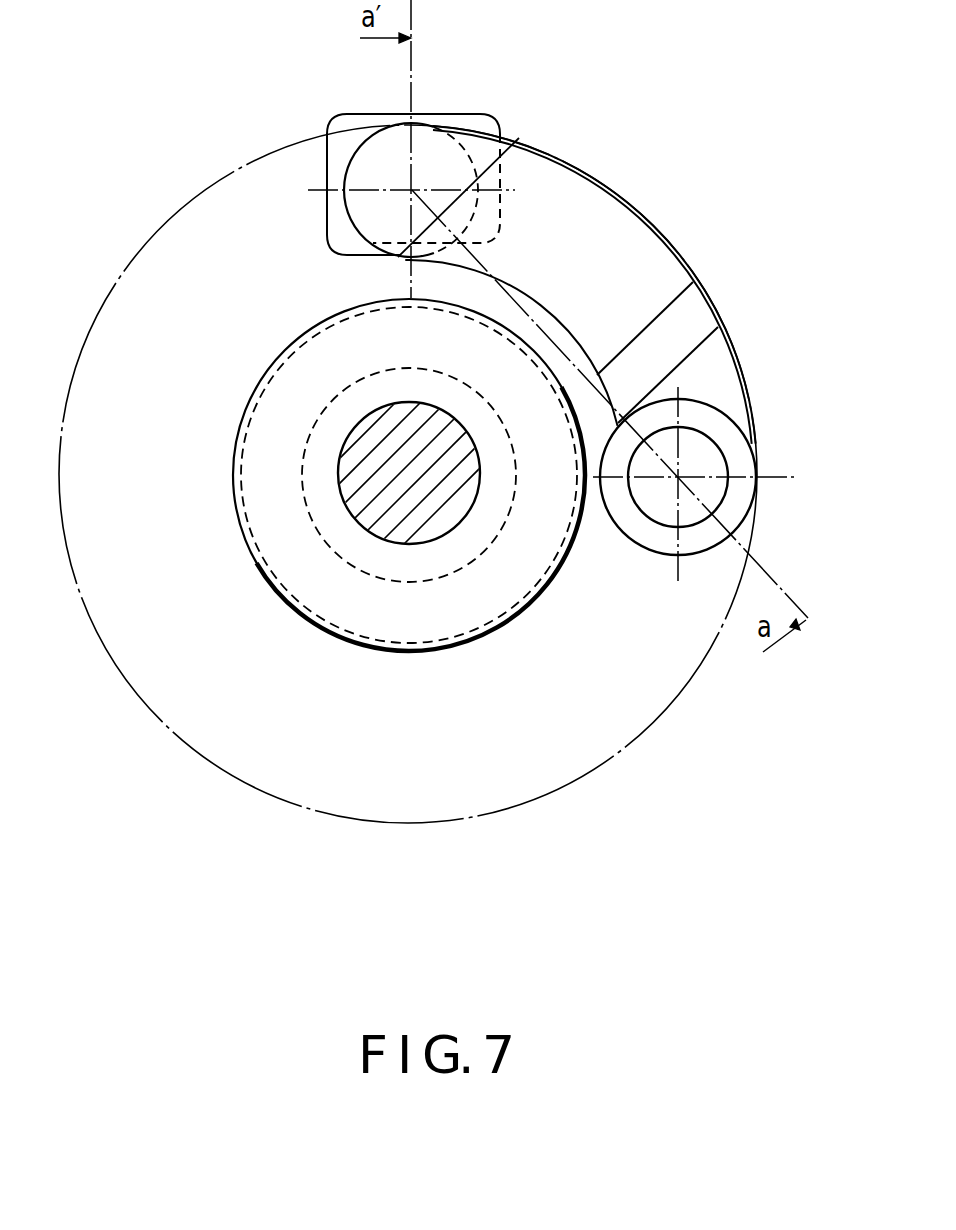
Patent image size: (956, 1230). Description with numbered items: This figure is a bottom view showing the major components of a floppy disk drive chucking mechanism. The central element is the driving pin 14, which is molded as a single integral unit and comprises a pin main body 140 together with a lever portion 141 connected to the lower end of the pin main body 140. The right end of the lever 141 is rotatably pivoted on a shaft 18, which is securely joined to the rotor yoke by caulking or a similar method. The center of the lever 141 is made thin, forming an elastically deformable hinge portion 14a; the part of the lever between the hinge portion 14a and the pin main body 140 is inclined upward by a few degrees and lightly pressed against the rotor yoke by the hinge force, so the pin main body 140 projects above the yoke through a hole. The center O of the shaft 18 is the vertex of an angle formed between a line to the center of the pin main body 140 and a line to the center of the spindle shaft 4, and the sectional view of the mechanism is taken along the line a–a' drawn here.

The spindle shaft 4 is at (438, 520).
The driving pin 14 is at (572, 192).
The hinge portion 14a is at (683, 327).
The shaft 18 is at (718, 492).
The pin main body 140 is at (423, 138).
The lever portion 141 is at (642, 252).
The center of the shaft O is at (680, 477).